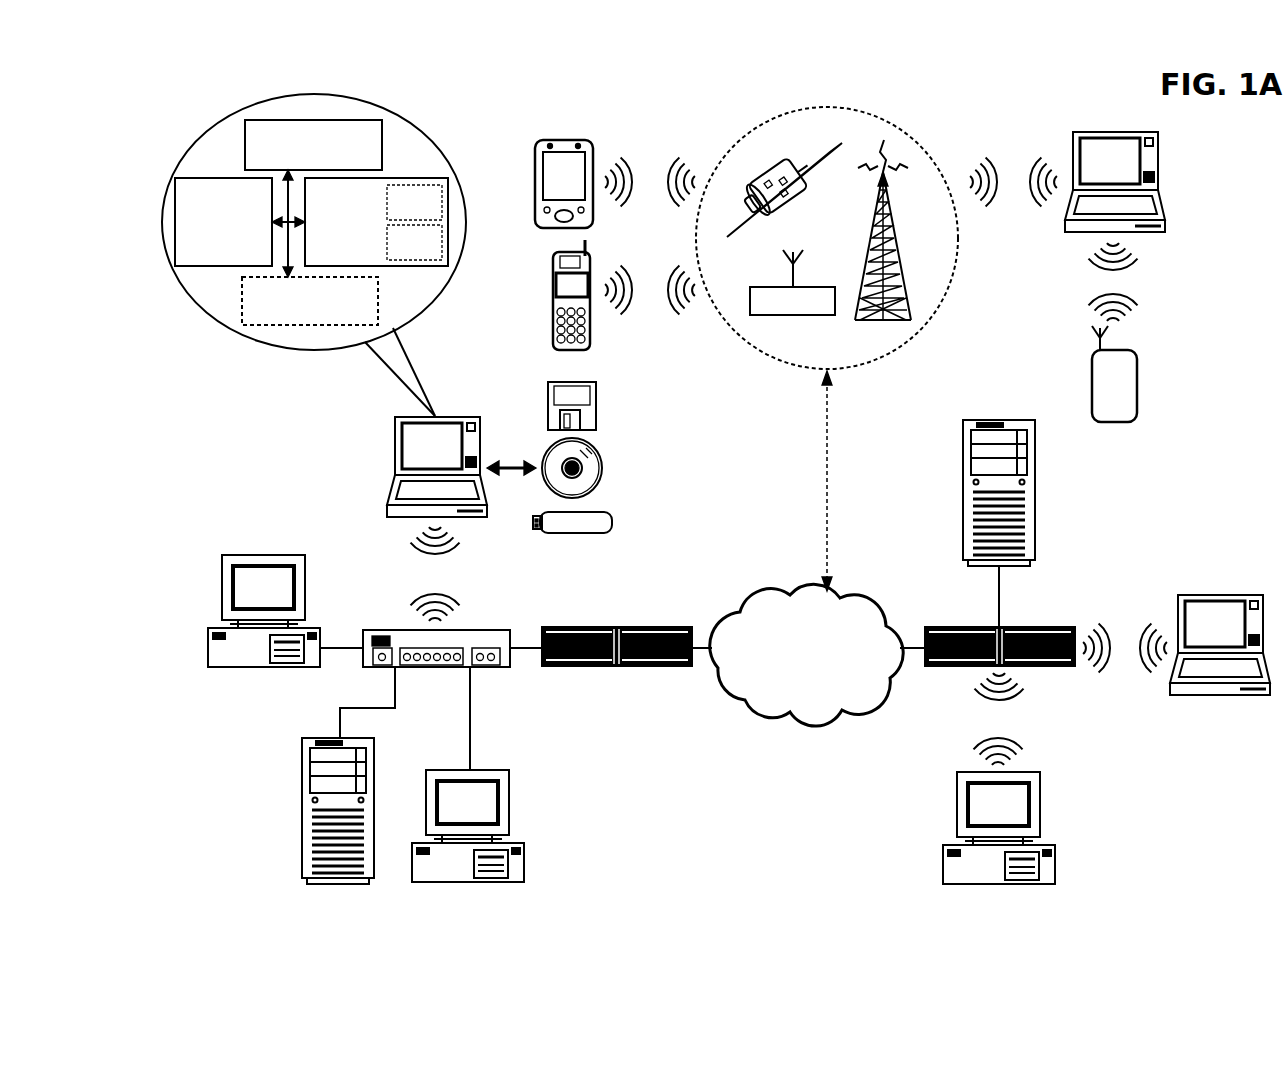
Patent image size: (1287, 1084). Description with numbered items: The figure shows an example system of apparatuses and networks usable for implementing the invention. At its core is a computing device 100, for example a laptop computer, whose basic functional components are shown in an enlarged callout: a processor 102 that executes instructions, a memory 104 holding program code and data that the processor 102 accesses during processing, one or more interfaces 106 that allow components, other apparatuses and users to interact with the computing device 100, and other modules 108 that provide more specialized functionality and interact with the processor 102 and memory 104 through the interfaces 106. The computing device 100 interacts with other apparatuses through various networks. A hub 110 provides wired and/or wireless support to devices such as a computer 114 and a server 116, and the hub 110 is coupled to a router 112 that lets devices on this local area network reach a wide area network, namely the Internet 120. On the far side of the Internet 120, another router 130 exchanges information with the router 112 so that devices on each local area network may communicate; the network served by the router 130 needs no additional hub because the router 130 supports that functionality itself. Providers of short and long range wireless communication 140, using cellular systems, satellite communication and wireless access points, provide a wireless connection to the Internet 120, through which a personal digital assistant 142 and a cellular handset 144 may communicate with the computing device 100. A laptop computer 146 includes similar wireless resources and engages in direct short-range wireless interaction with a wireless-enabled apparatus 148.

The computing device 100 is at (324, 324).
The processor 102 is at (223, 222).
The memory 104 is at (376, 222).
The interfaces 106 is at (313, 145).
The other modules 108 is at (310, 301).
The hub 110 is at (446, 618).
The router 112 is at (627, 616).
The computer 114 is at (245, 611).
The server 116 is at (315, 811).
The Internet 120 is at (799, 670).
The router 130 is at (1046, 635).
The providers of short and long range wireless communication 140 is at (876, 347).
The personal digital assistant 142 is at (591, 177).
The cellular handset 144 is at (601, 295).
The laptop computer 146 is at (1136, 196).
The wireless-enabled apparatus 148 is at (1139, 358).